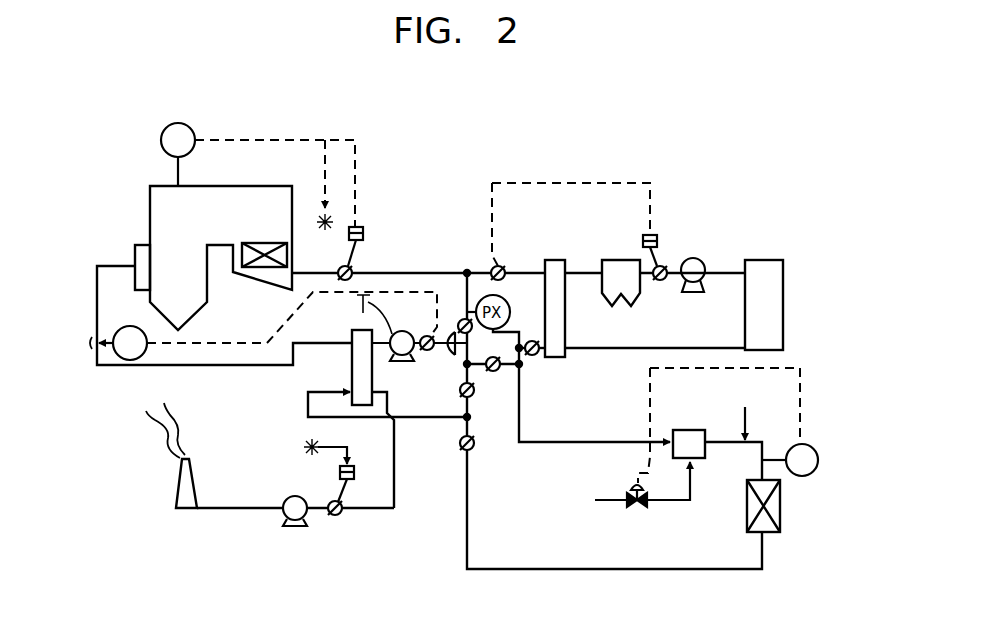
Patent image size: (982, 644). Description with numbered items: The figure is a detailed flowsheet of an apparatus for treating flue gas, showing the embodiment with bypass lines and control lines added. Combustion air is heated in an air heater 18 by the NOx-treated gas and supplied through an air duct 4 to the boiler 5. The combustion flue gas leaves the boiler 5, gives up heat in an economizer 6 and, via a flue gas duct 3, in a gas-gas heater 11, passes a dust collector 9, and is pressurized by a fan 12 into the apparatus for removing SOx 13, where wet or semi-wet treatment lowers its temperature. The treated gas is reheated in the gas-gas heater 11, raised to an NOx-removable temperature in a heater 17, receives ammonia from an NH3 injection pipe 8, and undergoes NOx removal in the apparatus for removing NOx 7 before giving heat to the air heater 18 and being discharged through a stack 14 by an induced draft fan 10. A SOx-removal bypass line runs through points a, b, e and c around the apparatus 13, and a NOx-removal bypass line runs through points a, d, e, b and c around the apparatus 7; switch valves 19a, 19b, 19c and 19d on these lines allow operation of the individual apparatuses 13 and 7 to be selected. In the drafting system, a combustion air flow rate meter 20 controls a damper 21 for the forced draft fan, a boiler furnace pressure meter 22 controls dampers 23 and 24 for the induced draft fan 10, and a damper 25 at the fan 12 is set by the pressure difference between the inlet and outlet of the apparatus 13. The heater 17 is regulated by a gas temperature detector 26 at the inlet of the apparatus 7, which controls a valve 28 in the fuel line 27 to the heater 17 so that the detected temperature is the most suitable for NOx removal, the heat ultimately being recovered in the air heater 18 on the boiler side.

The flue gas duct 3 is at (402, 273).
The air duct 4 is at (213, 365).
The boiler 5 is at (165, 210).
The economizer 6 is at (262, 243).
The apparatus for removing NOx 7 is at (780, 505).
The NH3 injection pipe 8 is at (748, 417).
The dust collector 9 is at (620, 260).
The induced draft fan 10 is at (290, 496).
The gas-gas heater 11 is at (553, 260).
The fan 12 is at (693, 258).
The apparatus for removing SOx 13 is at (767, 260).
The stack 14 is at (176, 500).
The heater 17 is at (680, 430).
The air heater 18 is at (350, 366).
The switch valve 19a is at (497, 265).
The switch valve 19b is at (496, 371).
The switch valve 19c is at (462, 390).
The switch valve 19d is at (533, 341).
The combustion air flow rate meter 20 is at (118, 330).
The damper 21 is at (424, 336).
The boiler furnace pressure meter 22 is at (173, 124).
The damper 23 is at (350, 267).
The damper 24 is at (338, 515).
The damper 25 is at (663, 280).
The gas temperature detector 26 is at (818, 460).
The fuel line 27 is at (595, 500).
The valve 28 is at (637, 508).
The bypass line point a is at (467, 271).
The bypass line point b is at (465, 365).
The bypass line point c is at (465, 419).
The bypass line point d is at (522, 353).
The bypass line point e is at (522, 367).